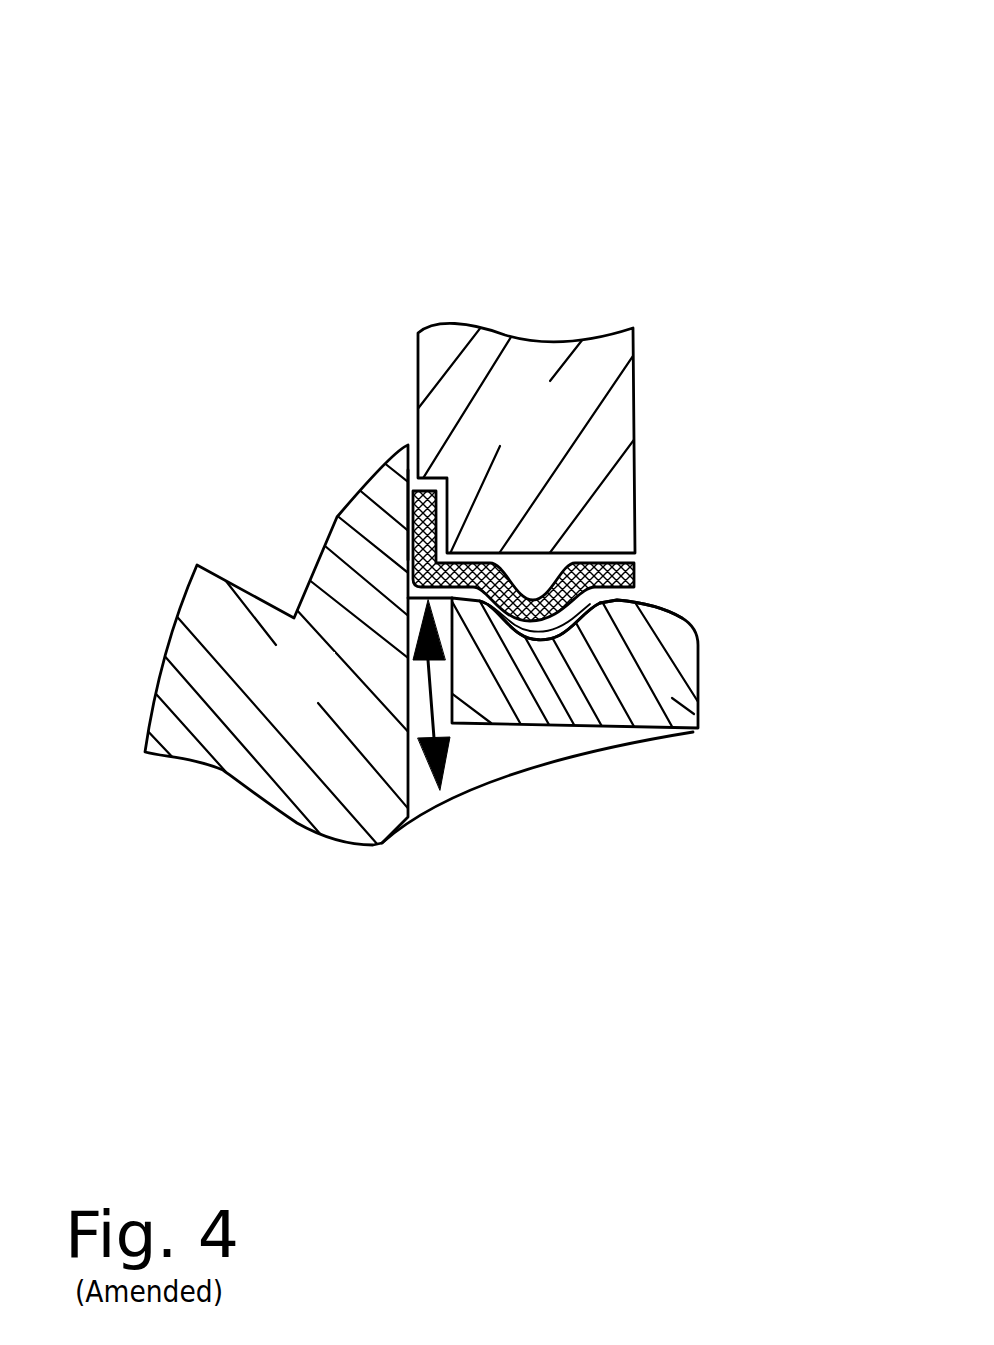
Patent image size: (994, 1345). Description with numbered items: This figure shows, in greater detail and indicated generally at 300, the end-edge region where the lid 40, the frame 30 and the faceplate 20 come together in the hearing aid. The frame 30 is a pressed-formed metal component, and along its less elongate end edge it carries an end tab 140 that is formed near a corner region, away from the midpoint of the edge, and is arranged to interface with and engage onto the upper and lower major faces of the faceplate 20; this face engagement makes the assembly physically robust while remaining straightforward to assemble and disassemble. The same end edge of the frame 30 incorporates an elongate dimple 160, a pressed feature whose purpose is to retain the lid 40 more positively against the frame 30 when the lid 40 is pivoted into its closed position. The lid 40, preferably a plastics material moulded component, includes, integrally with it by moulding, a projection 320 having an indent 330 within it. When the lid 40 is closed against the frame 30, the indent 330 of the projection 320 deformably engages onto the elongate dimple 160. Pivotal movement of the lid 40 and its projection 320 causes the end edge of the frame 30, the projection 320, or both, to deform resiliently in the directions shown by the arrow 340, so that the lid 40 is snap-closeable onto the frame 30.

The detail region 300 is at (628, 108).
The faceplate 20 is at (558, 447).
The lid 40 is at (331, 693).
The end tab 140 is at (405, 520).
The frame 30 is at (642, 570).
The elongate dimple 160 is at (617, 600).
The projection 320 is at (697, 723).
The indent 330 is at (555, 635).
The arrow 340 is at (425, 700).